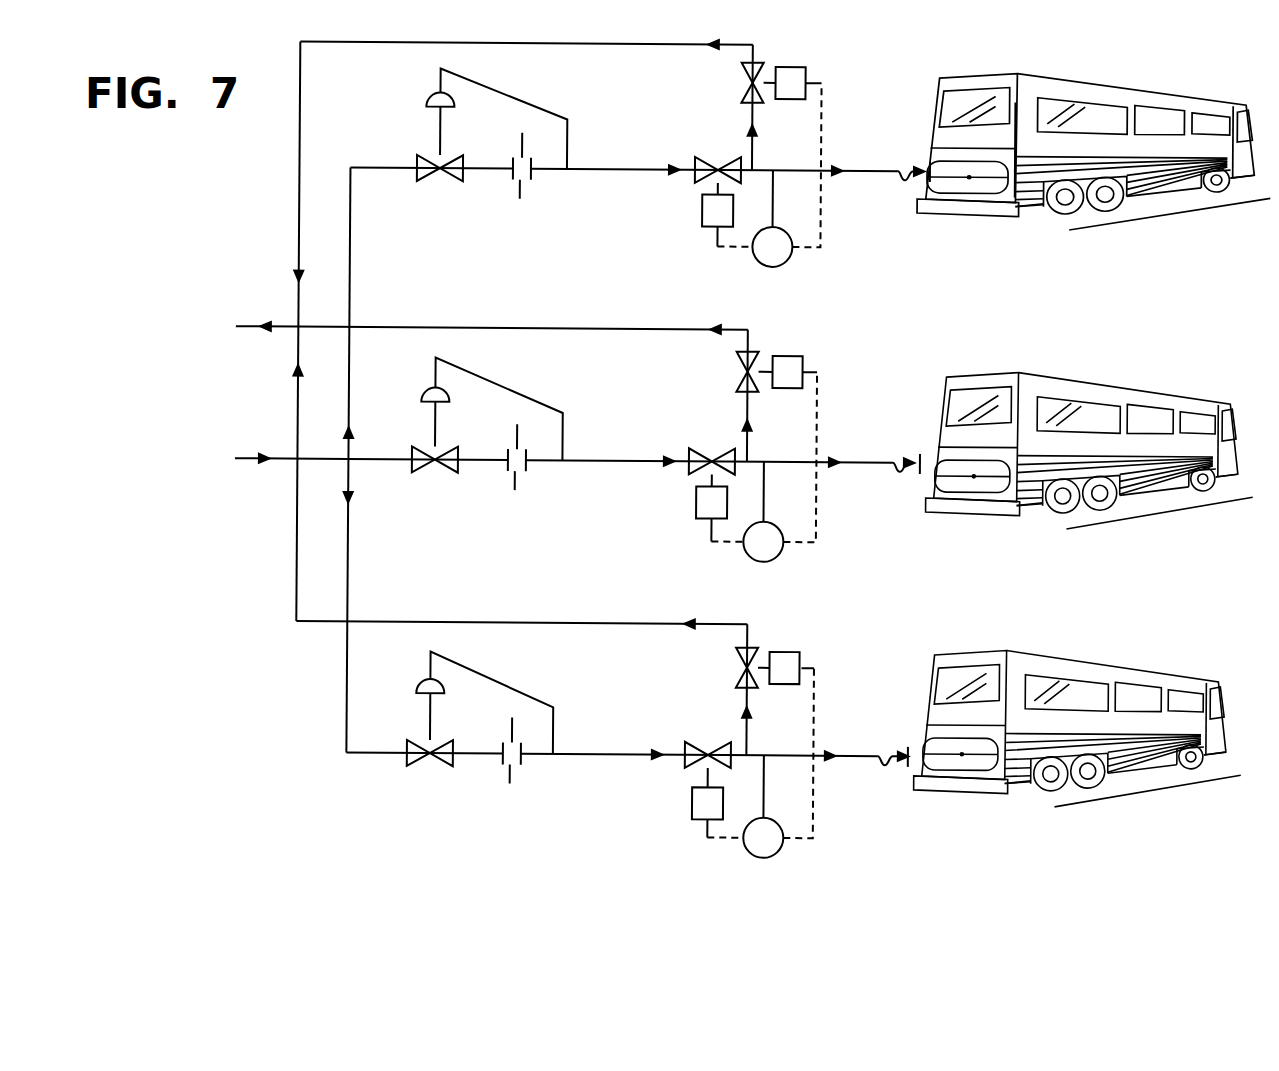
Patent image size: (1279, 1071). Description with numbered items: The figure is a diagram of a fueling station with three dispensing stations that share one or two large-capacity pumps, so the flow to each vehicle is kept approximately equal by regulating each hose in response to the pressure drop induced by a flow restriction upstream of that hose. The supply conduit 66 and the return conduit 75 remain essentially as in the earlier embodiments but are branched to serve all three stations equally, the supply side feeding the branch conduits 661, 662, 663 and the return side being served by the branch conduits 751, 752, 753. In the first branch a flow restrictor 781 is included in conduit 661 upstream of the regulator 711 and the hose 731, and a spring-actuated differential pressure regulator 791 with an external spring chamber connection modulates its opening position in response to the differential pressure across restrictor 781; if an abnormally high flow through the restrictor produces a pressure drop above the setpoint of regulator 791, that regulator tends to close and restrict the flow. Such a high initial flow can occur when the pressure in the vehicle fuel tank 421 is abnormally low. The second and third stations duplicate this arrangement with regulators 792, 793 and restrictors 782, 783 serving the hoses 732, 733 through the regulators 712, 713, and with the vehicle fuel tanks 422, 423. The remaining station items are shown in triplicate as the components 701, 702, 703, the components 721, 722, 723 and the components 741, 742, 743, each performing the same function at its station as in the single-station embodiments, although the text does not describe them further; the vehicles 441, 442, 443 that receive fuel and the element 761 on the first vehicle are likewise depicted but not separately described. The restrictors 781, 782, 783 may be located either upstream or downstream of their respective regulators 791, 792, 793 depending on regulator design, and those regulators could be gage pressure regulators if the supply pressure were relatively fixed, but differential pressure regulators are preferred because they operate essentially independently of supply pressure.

The conduit 66 is at (237, 461).
The conduit 75 is at (241, 329).
The vehicle fuel tank 421 is at (1097, 207).
The vehicle fuel tank 422 is at (1088, 502).
The vehicle fuel tank 423 is at (1080, 789).
The first vehicle (bus) 441 is at (1102, 82).
The second vehicle (bus) 442 is at (1096, 381).
The third vehicle (bus) 443 is at (1088, 656).
The conduit 661 is at (605, 169).
The conduit 662 is at (601, 461).
The conduit 663 is at (596, 754).
The dispensing station component 701 is at (760, 272).
The dispensing station component 702 is at (750, 561).
The dispensing station component 703 is at (748, 853).
The regulator 711 is at (712, 158).
The regulator 712 is at (708, 449).
The regulator 713 is at (705, 743).
The dispensing station component 721 is at (758, 67).
The dispensing station component 722 is at (756, 356).
The dispensing station component 723 is at (753, 652).
The hose 731 is at (905, 177).
The hose 732 is at (903, 466).
The hose 733 is at (884, 766).
The dispensing station component 741 is at (928, 168).
The dispensing station component 742 is at (920, 460).
The dispensing station component 743 is at (910, 752).
The conduit 751 is at (565, 44).
The conduit 752 is at (546, 329).
The conduit 753 is at (568, 623).
The vehicle fuel storage compartment 761 is at (1025, 156).
The flow restrictor 781 is at (517, 186).
The flow restrictor 782 is at (514, 478).
The flow restrictor 783 is at (510, 775).
The spring-actuated differential pressure regulator 791 is at (430, 183).
The differential pressure regulator 792 is at (425, 474).
The differential pressure regulator 793 is at (421, 768).